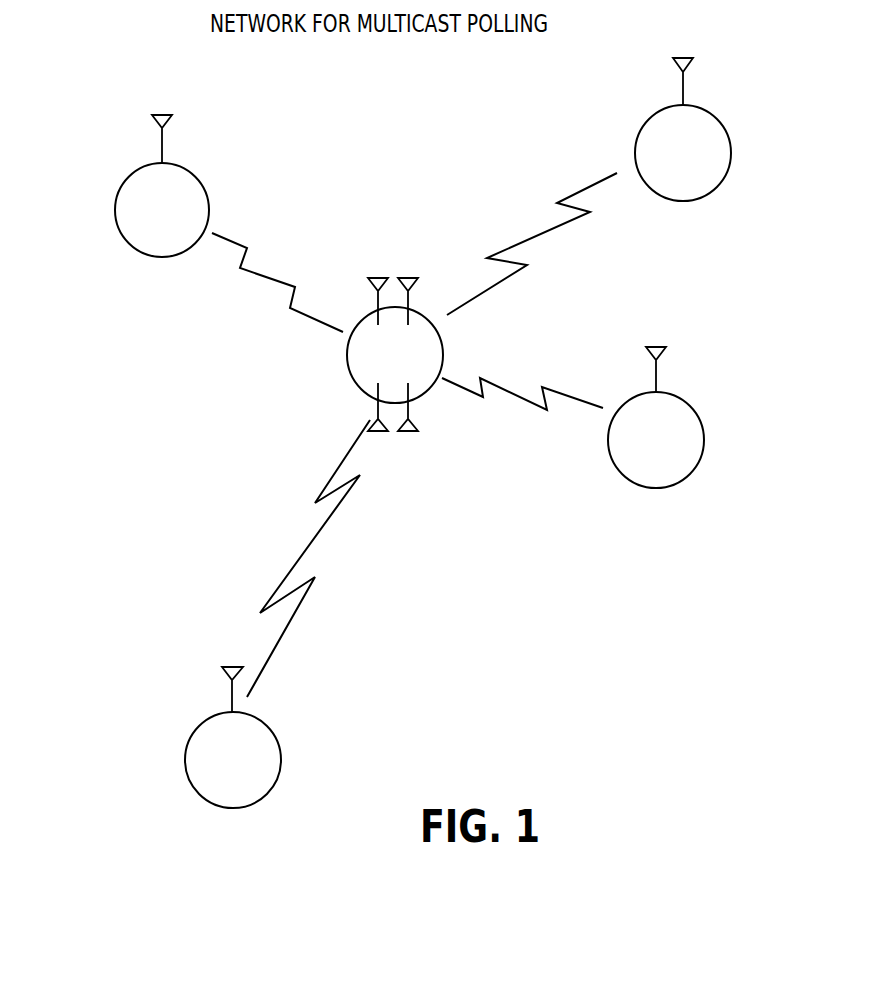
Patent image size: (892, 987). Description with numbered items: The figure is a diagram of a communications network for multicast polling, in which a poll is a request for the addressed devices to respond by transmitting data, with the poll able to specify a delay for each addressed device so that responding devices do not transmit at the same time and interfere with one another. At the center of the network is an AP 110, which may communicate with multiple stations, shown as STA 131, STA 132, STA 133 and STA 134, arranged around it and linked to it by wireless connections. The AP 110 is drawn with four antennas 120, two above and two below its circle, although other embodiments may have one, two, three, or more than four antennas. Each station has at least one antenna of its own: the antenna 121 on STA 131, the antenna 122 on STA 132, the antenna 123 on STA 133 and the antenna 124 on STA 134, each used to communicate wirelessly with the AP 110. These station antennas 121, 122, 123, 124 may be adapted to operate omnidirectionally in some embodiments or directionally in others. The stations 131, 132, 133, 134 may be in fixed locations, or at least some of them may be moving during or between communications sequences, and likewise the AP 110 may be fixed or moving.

The AP 110 is at (348, 360).
The antennas 120 is at (372, 278).
The antenna 121 is at (681, 56).
The antenna 122 is at (651, 346).
The antenna 123 is at (228, 664).
The antenna 124 is at (156, 114).
The STA 131 is at (653, 113).
The STA 132 is at (690, 474).
The STA 133 is at (268, 794).
The STA 134 is at (116, 203).